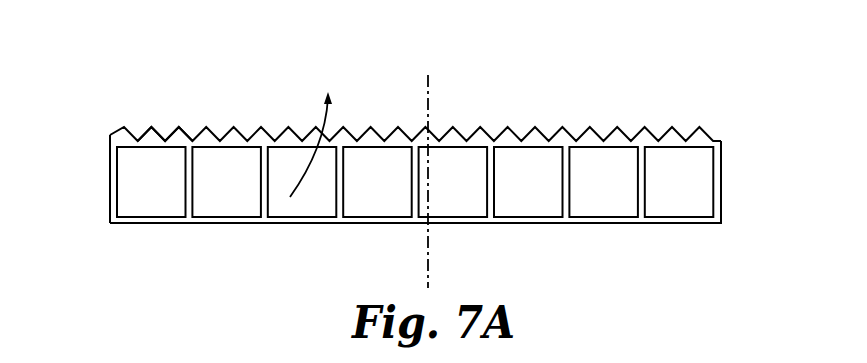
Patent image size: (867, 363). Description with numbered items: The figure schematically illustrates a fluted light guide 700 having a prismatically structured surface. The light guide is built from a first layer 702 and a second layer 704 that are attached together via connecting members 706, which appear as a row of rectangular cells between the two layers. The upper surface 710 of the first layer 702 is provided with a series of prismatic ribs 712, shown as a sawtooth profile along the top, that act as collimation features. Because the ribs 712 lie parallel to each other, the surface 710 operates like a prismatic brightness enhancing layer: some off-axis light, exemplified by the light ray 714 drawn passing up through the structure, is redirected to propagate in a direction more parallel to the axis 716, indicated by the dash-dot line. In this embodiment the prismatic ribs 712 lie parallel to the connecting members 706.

The fluted light guide 700 is at (417, 176).
The first layer 702 is at (717, 139).
The second layer 704 is at (687, 223).
The connecting members 706 is at (562, 200).
The upper surface 710 is at (114, 131).
The prismatic ribs 712 is at (177, 128).
The light ray 714 is at (298, 200).
The axis 716 is at (428, 268).